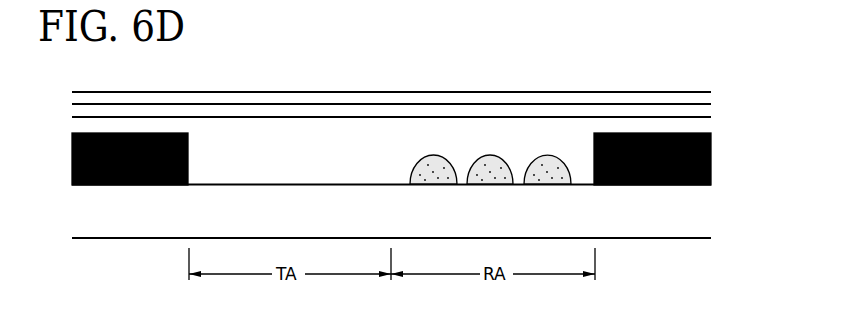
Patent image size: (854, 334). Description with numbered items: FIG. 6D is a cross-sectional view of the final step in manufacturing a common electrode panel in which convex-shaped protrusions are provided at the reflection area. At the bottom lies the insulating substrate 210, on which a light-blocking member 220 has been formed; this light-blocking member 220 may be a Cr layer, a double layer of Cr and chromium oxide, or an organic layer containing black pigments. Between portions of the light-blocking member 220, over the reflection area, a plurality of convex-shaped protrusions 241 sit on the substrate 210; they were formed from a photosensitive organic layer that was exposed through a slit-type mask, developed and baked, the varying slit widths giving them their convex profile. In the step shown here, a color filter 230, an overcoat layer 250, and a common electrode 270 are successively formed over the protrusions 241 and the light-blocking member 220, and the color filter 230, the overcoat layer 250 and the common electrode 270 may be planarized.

The common electrode 270 is at (710, 96).
The overcoat layer 250 is at (703, 112).
The color filter 230 is at (705, 129).
The light-blocking member 220 is at (711, 158).
The insulating substrate 210 is at (705, 213).
The convex-shaped protrusions 241 is at (432, 155).